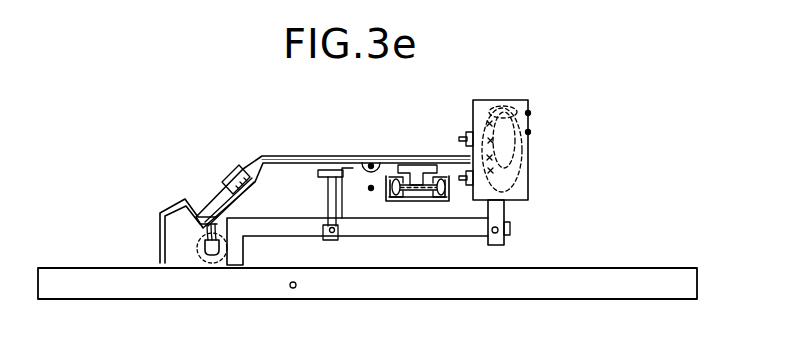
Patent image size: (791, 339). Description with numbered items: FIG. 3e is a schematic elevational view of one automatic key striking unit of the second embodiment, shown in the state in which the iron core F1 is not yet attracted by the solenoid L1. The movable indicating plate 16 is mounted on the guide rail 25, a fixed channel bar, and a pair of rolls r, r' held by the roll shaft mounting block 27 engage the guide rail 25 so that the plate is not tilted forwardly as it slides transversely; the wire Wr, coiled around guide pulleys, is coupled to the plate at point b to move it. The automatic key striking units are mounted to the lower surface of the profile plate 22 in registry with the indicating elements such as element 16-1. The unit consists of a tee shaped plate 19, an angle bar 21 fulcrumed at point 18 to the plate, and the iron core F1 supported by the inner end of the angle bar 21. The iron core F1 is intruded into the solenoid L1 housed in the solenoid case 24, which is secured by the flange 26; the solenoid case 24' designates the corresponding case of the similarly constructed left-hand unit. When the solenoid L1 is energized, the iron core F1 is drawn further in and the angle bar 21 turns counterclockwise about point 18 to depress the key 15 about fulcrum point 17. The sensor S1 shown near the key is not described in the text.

The key 15 is at (90, 292).
The movable indicating plate 16 is at (313, 155).
The indicating element 16-1 is at (233, 178).
The fulcrum point 17 is at (296, 289).
The fulcrum 18 is at (327, 237).
The tee shaped plate 19 is at (327, 203).
The angle bar 21 is at (378, 229).
The profile plate 22 is at (283, 155).
The solenoid case 24 is at (508, 133).
The solenoid case 24' is at (188, 210).
The guide rail 25 is at (438, 201).
The flange 26 is at (466, 133).
The roll shaft mounting block 27 is at (418, 170).
The wire coupling point b is at (371, 158).
The roll r is at (394, 163).
The roll r' is at (440, 163).
The wire Wr is at (363, 202).
The solenoid L1 is at (506, 157).
The iron core F1 is at (505, 212).
The sensor S1 is at (217, 263).